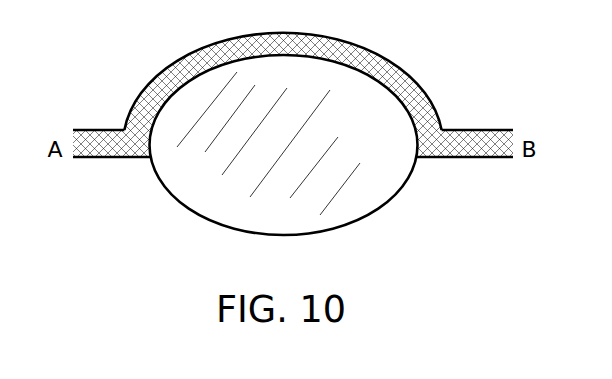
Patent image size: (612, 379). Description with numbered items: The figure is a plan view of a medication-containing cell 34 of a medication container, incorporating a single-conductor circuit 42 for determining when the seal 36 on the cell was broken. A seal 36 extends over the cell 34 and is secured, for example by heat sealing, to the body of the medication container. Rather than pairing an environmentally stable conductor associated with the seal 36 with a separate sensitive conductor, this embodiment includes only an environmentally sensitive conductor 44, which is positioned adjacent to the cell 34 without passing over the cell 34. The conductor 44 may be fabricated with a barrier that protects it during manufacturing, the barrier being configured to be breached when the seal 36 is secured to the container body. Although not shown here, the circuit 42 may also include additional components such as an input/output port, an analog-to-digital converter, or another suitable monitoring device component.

The medication-containing cell 34 is at (396, 193).
The seal 36 is at (181, 180).
The circuit 42 is at (443, 128).
The environmentally sensitive conductor 44 is at (364, 55).